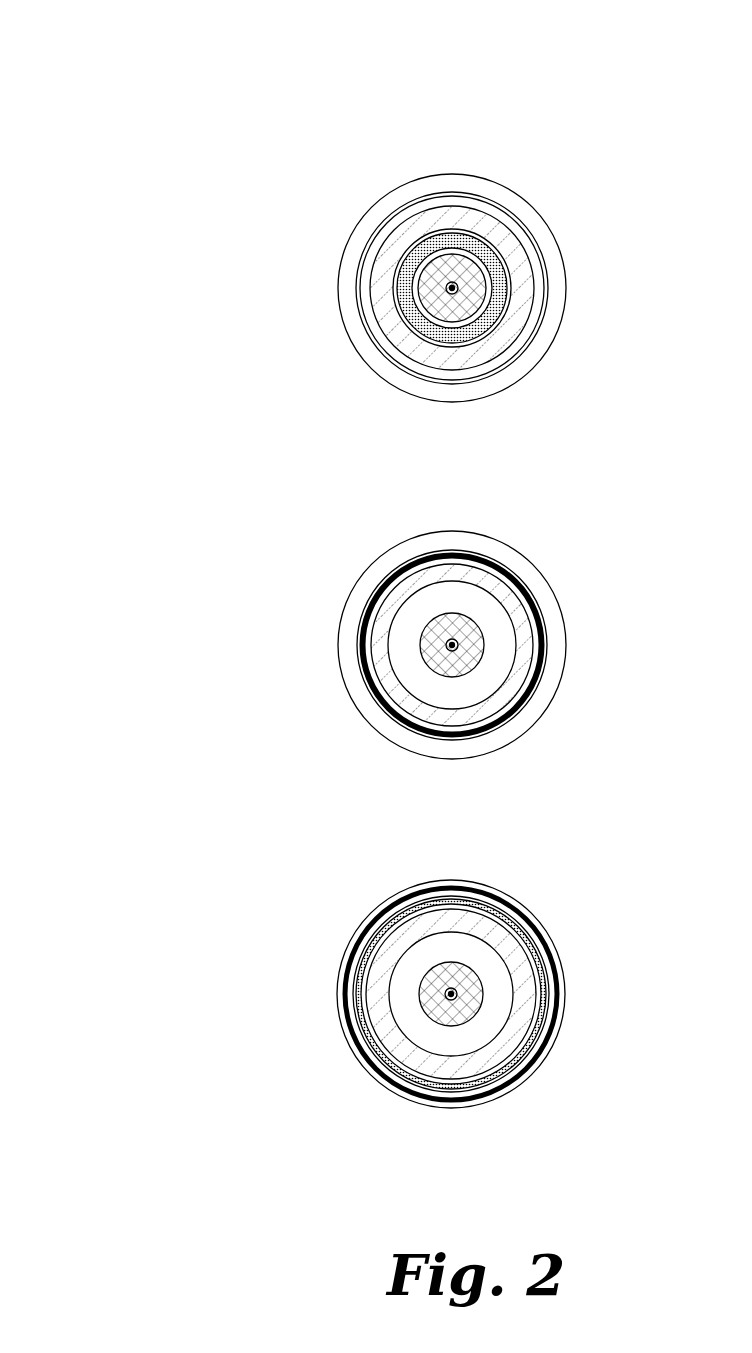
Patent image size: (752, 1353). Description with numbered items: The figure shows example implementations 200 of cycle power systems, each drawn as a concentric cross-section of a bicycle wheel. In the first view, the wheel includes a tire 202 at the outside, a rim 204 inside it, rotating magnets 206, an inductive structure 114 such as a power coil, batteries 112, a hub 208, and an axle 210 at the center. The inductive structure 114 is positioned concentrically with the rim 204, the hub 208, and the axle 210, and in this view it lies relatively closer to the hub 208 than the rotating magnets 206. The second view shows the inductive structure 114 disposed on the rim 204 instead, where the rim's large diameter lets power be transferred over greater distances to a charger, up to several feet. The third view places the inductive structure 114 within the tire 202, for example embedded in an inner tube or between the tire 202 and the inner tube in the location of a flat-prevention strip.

The cycle power system implementations 200 is at (165, 71).
The tire 202 is at (388, 198).
The rim 204 is at (377, 227).
The rotating magnets 206 is at (377, 273).
The inductive structure 114 is at (499, 605).
The batteries 112 is at (473, 285).
The hub 208 is at (456, 296).
The axle 210 is at (448, 296).